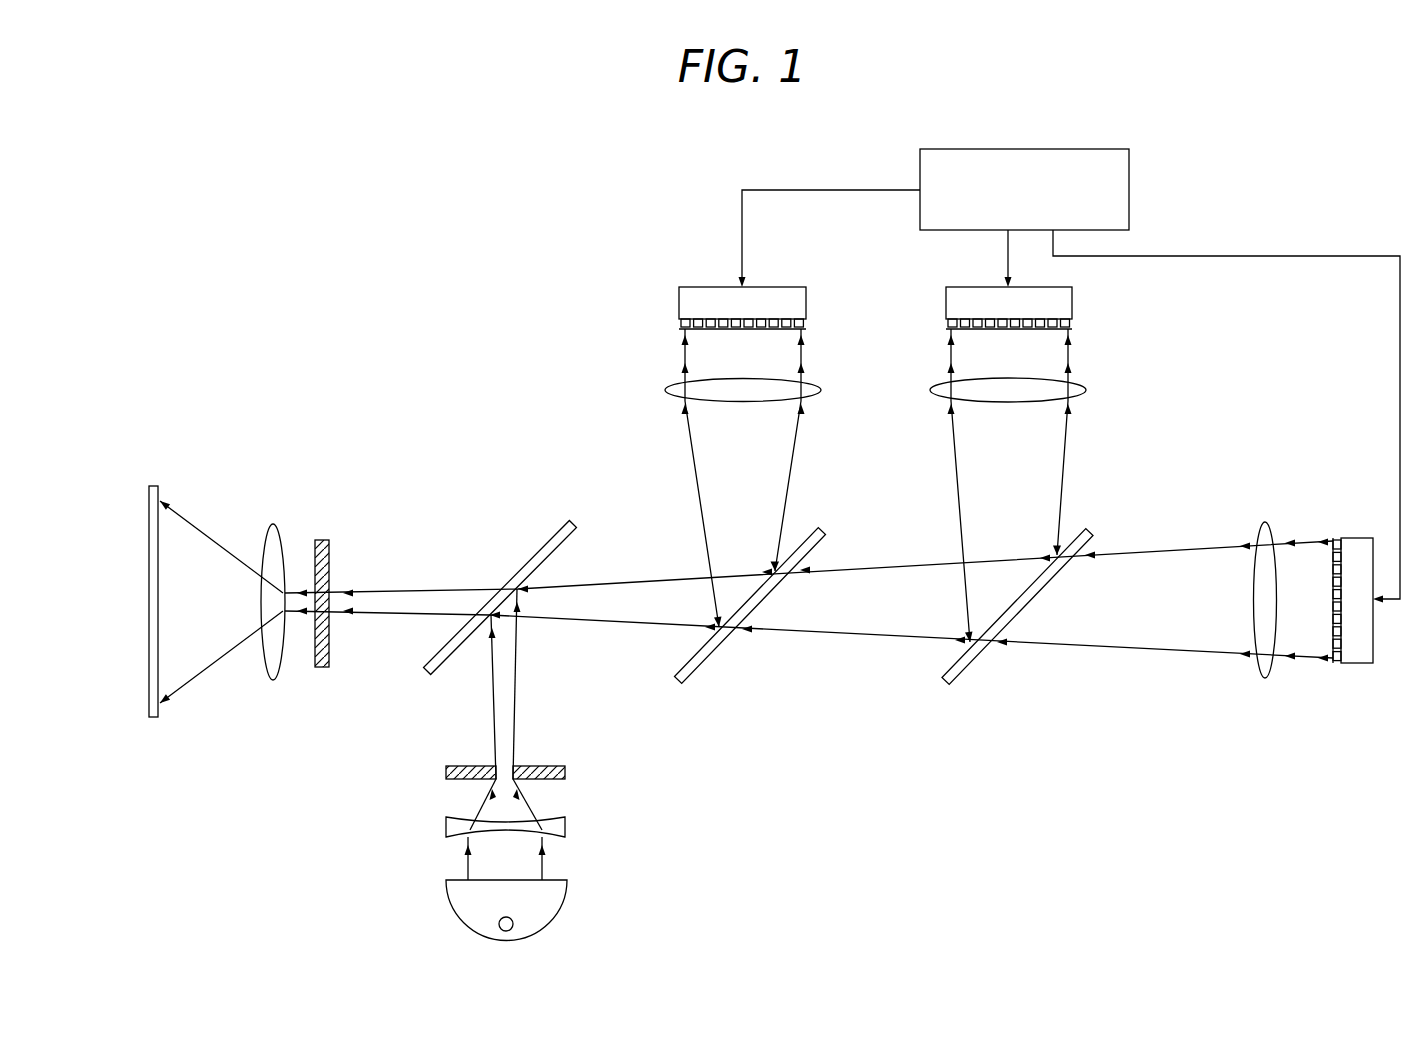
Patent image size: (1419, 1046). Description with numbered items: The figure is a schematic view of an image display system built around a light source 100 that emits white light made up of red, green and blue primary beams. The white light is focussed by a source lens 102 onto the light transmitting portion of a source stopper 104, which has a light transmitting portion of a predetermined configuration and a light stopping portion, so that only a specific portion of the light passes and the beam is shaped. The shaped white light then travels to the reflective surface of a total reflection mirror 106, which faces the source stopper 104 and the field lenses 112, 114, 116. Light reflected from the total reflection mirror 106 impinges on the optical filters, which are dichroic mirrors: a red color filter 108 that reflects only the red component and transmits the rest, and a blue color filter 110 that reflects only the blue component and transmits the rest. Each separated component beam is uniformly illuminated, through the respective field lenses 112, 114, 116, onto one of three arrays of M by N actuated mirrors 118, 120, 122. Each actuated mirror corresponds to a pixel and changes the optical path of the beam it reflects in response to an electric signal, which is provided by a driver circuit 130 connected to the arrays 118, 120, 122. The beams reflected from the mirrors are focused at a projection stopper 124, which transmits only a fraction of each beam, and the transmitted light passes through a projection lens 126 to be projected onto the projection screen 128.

The light source 100 is at (552, 912).
The source lens 102 is at (565, 826).
The source stopper 104 is at (565, 770).
The total reflection mirror 106 is at (557, 520).
The red color filter 108 is at (817, 530).
The blue color filter 110 is at (1090, 528).
The field lens 112 is at (666, 388).
The field lens 114 is at (1086, 390).
The field lens 116 is at (1265, 522).
The array of M×N actuated mirrors 118 is at (679, 300).
The array of M×N actuated mirrors 120 is at (1072, 303).
The array of M×N actuated mirrors 122 is at (1358, 665).
The projection stopper 124 is at (325, 540).
The projection lens 126 is at (275, 525).
The projection screen 128 is at (153, 486).
The driver circuit 130 is at (1063, 149).